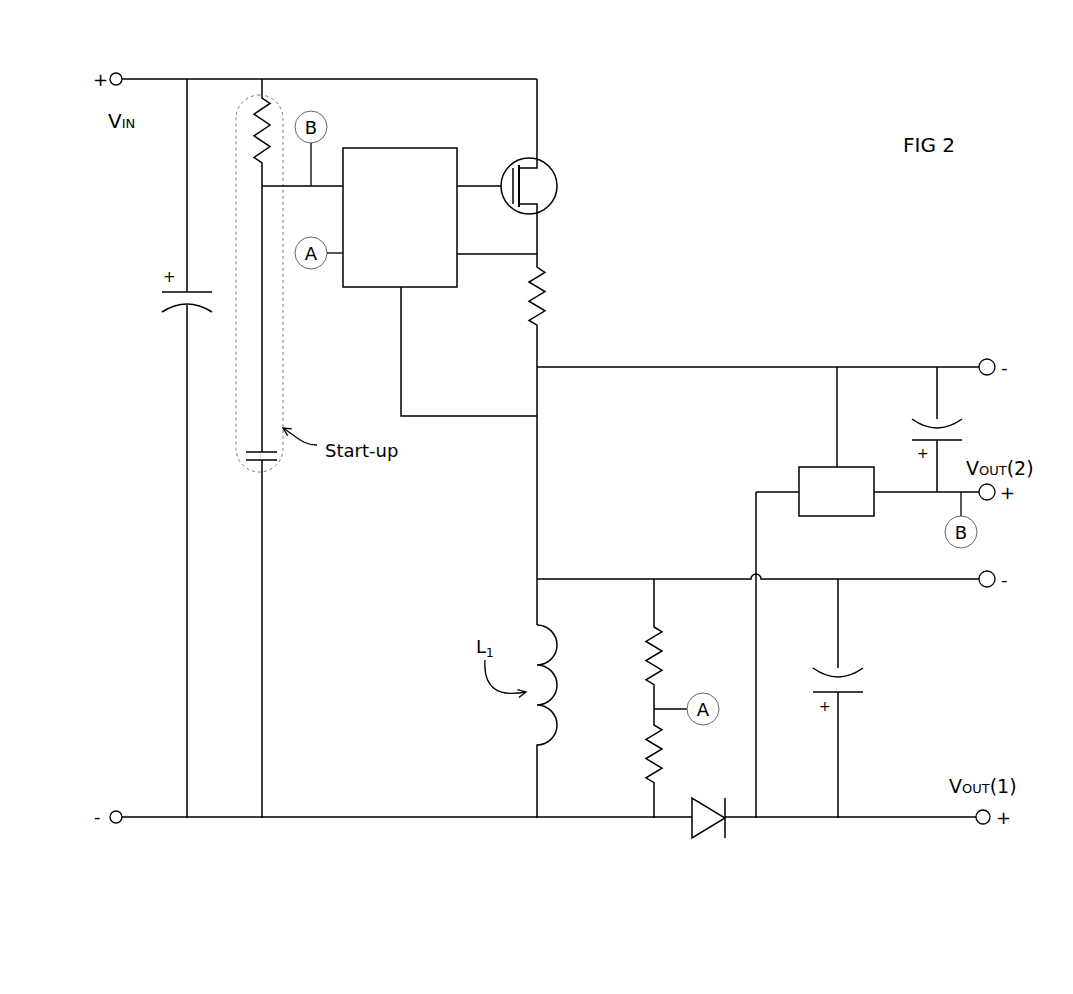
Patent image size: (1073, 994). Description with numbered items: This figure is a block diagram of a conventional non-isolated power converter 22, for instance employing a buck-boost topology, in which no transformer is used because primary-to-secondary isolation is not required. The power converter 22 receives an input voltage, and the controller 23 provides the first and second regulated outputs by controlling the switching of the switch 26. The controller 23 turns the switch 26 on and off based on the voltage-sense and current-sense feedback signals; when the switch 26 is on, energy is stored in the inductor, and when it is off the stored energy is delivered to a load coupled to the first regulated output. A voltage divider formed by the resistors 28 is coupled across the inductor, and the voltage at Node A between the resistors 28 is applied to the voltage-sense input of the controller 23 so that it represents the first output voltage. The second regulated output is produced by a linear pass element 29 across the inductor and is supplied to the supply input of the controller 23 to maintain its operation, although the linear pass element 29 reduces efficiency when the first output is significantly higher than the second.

The non-isolated power converter 22 is at (306, 838).
The controller 23 is at (392, 146).
The switch 26 is at (558, 188).
The resistors 28 is at (639, 743).
The linear pass element 29 is at (810, 462).